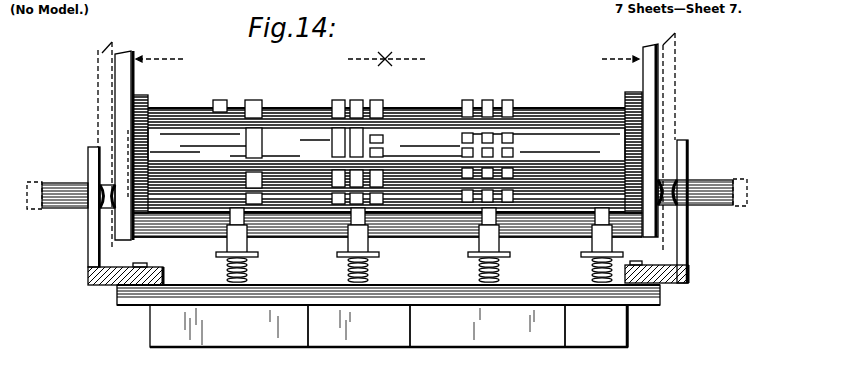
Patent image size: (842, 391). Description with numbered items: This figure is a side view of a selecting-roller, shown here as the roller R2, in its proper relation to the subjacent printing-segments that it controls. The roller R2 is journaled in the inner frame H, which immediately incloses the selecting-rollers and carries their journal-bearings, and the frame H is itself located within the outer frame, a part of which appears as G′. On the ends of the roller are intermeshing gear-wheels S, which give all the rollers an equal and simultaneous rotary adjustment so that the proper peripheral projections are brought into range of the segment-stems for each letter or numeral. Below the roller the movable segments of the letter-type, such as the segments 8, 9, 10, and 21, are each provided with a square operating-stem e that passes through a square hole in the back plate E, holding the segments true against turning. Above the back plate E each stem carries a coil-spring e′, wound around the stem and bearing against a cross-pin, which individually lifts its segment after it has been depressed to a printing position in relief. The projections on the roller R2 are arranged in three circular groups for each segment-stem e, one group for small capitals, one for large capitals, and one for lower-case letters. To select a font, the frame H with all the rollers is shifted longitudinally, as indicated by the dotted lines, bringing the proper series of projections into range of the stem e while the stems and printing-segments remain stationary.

The frame H is at (122, 70).
The intermeshing gear-wheels S is at (632, 97).
The frame G′ is at (93, 226).
The selecting-roller R2 is at (407, 127).
The operating-stem e is at (247, 246).
The coil-spring e′ is at (248, 272).
The back plate E is at (127, 300).
The movable segment 8 is at (229, 326).
The movable segment 9 is at (359, 326).
The movable segment 10 is at (487, 326).
The movable segment 21 is at (596, 326).